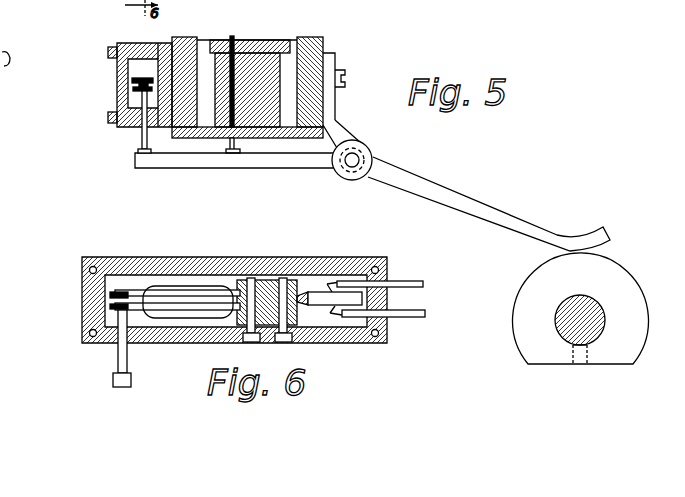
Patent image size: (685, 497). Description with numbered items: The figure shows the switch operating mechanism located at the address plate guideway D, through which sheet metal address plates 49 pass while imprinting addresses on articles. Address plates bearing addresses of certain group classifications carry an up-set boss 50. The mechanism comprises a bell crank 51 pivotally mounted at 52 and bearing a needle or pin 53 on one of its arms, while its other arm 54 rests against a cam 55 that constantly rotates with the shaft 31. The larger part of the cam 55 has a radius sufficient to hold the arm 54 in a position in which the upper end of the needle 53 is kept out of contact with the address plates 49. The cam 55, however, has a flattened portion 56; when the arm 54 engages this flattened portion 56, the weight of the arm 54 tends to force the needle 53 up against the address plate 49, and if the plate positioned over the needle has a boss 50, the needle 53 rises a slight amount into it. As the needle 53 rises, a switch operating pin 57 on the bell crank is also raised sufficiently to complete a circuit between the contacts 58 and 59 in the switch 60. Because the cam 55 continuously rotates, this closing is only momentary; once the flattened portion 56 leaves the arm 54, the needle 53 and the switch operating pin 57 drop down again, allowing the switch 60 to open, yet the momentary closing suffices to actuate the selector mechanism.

In FIG. 5, the switch 60 is at (128, 42).
In FIG. 6, the switch 60 is at (252, 258).
In FIG. 5, the contact 58 is at (138, 80).
In FIG. 6, the contact 58 is at (112, 294).
In FIG. 5, the contact 59 is at (138, 89).
In FIG. 6, the contact 59 is at (112, 306).
In FIG. 5, the switch operating pin 57 is at (142, 143).
In FIG. 6, the switch operating pin 57 is at (118, 363).
In FIG. 5, the up-set boss 50 is at (233, 37).
In FIG. 5, the address plate 49 is at (256, 40).
In FIG. 5, the address plate guideway D is at (320, 36).
In FIG. 5, the needle or pin 53 is at (231, 140).
In FIG. 5, the bell crank 51 is at (297, 166).
In FIG. 5, the pivot 52 is at (366, 160).
In FIG. 5, the arm of the bell crank 54 is at (562, 238).
In FIG. 5, the cam 55 is at (631, 293).
In FIG. 5, the shaft 31 is at (592, 324).
In FIG. 5, the flattened portion 56 is at (615, 365).